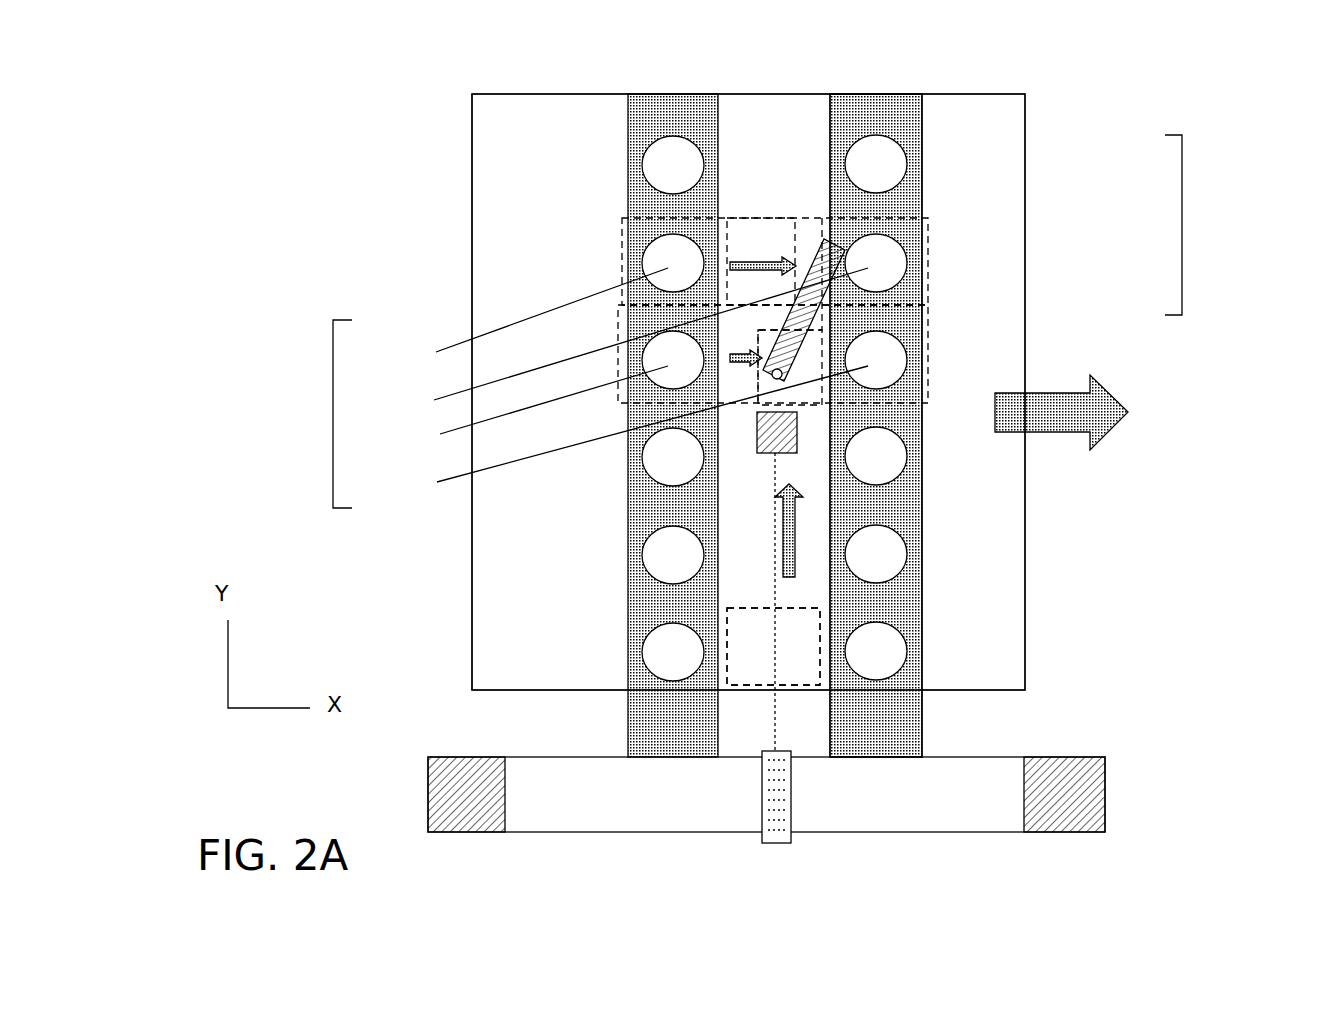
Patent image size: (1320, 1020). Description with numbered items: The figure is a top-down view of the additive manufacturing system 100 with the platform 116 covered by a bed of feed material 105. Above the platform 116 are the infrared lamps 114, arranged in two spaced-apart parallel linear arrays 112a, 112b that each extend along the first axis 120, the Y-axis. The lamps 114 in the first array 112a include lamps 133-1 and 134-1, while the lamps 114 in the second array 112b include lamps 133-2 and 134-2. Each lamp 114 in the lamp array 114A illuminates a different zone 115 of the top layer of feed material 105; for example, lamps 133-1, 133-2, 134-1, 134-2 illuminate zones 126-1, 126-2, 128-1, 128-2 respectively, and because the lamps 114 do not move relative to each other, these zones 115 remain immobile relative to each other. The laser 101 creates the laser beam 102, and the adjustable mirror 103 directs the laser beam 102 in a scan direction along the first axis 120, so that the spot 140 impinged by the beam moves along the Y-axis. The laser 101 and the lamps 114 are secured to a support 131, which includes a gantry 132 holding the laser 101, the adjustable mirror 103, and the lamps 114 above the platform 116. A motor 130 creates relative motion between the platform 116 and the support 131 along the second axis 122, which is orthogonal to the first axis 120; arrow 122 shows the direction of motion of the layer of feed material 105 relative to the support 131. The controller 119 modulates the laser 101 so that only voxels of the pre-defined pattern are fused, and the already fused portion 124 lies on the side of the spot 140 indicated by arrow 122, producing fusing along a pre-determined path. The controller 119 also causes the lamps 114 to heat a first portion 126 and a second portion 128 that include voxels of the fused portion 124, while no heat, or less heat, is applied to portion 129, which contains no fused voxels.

The additive manufacturing system 100 is at (377, 252).
The platform 116 is at (472, 200).
The feed material 105 is at (577, 256).
The first array 112a is at (628, 462).
The second array 112b is at (922, 606).
The lamp array 114A is at (877, 104).
The infrared lamps 114 is at (333, 412).
The lamp 133-1 is at (668, 268).
The lamp 133-2 is at (868, 268).
The lamp 134-1 is at (668, 366).
The lamp 134-2 is at (868, 366).
The first portion 126 is at (812, 218).
The zone 126-1 is at (806, 213).
The zone 126-2 is at (830, 270).
The second portion 128 is at (797, 407).
The zone 128-1 is at (840, 303).
The zone 128-2 is at (925, 330).
The zones 115 is at (1182, 226).
The fused portion 124 is at (803, 343).
The spot 140 is at (786, 377).
The adjustable mirror 103 is at (757, 440).
The first axis 120 is at (795, 547).
The second axis 122 is at (1065, 412).
The laser beam 102 is at (775, 718).
The portion 129 is at (727, 630).
The support 131 is at (1130, 803).
The gantry 132 is at (592, 832).
The controller 119 is at (472, 830).
The motor 130 is at (1063, 757).
The laser 101 is at (774, 841).